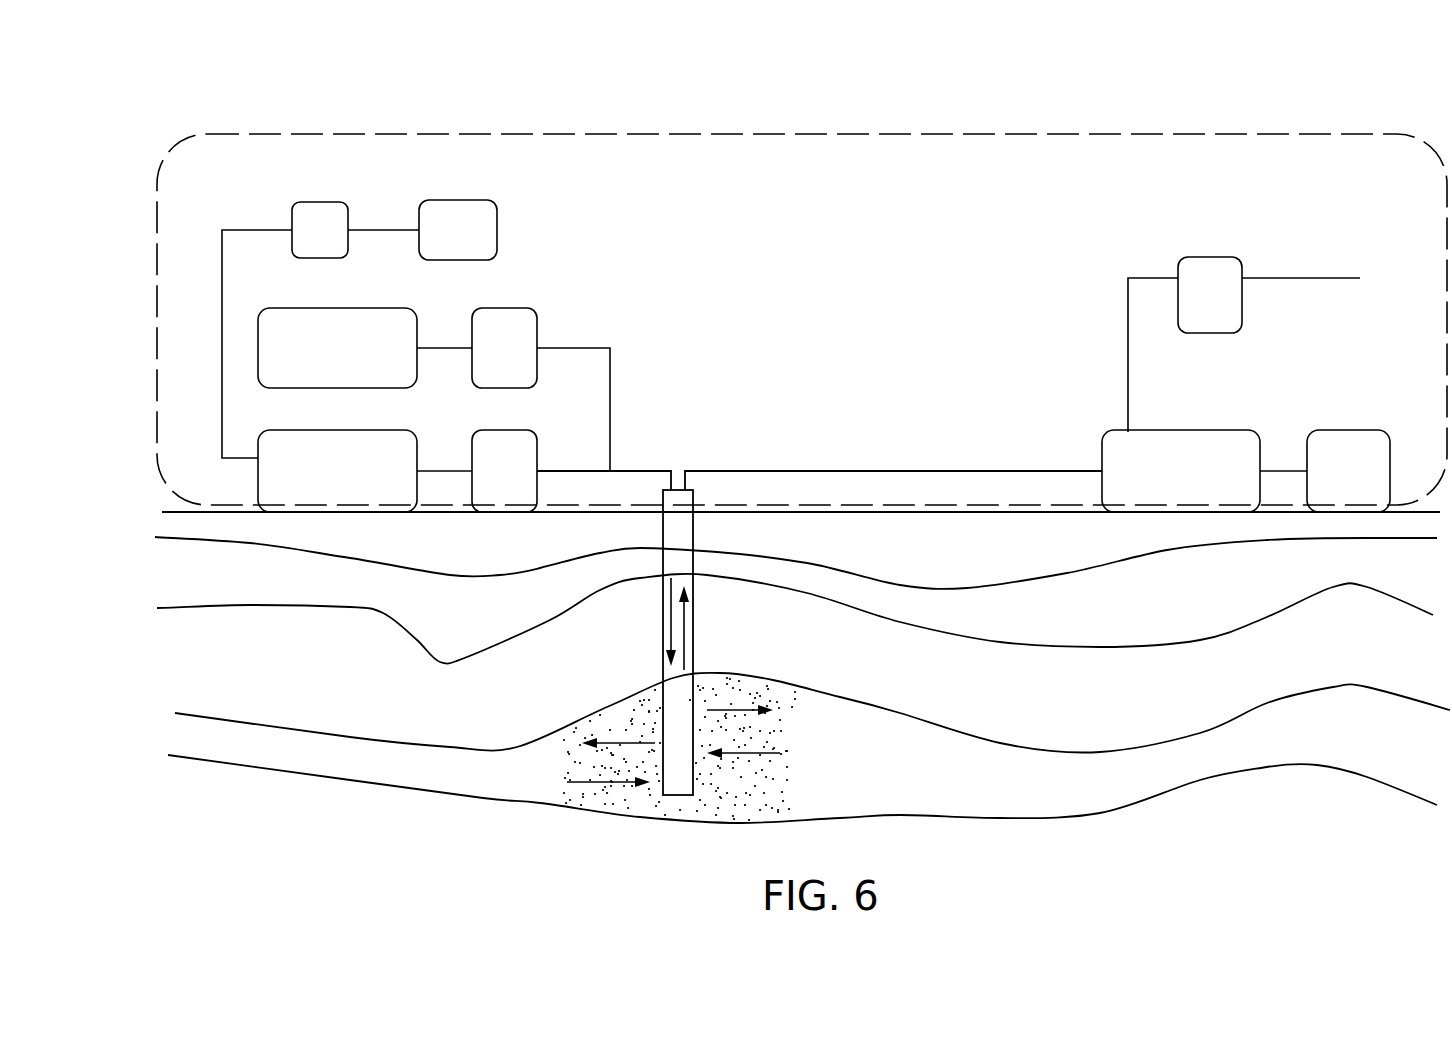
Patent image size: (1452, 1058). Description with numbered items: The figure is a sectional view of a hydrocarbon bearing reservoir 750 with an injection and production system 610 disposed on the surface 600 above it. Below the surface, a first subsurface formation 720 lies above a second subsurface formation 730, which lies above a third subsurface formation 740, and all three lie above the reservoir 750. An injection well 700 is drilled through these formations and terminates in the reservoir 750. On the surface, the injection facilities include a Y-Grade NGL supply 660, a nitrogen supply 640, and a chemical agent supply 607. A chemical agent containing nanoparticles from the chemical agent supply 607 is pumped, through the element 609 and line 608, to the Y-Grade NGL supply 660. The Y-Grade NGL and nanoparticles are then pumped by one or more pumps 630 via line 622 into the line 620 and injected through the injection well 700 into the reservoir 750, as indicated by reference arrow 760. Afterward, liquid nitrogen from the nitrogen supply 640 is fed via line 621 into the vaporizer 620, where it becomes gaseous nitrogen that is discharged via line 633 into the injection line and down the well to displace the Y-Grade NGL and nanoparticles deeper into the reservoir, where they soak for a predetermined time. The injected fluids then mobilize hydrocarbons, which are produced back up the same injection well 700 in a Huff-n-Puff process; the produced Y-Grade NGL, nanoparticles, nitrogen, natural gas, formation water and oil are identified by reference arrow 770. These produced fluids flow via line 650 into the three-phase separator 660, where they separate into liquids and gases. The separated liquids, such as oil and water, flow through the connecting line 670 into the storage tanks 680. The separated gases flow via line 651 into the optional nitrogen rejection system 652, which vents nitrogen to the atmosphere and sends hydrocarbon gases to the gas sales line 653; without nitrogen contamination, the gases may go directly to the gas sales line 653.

The surface 600 is at (178, 512).
The chemical agent supply 607 is at (460, 200).
The line 608 is at (385, 230).
The controller 609 is at (320, 203).
The injection and production system 610 is at (333, 133).
The vaporizer 620 is at (503, 308).
The line 621 is at (440, 348).
The line 622 is at (440, 471).
The pumps 630 is at (503, 430).
The line 633 is at (590, 347).
The nitrogen supply 640 is at (338, 308).
The line 650 is at (1078, 470).
The line 651 is at (1128, 305).
The nitrogen rejection system 652 is at (1212, 257).
The gas sales line 653 is at (1288, 277).
The Y-Grade NGL supply 660 is at (338, 430).
The connection line 670 is at (1282, 470).
The storage tanks 680 is at (1362, 432).
The injection well 700 is at (693, 530).
The first subsurface formation 720 is at (1192, 545).
The second subsurface formation 730 is at (1297, 585).
The third subsurface formation 740 is at (1368, 663).
The hydrocarbon bearing reservoir 750 is at (1362, 743).
The reference arrow 760 is at (737, 710).
The reference arrow 770 is at (757, 760).